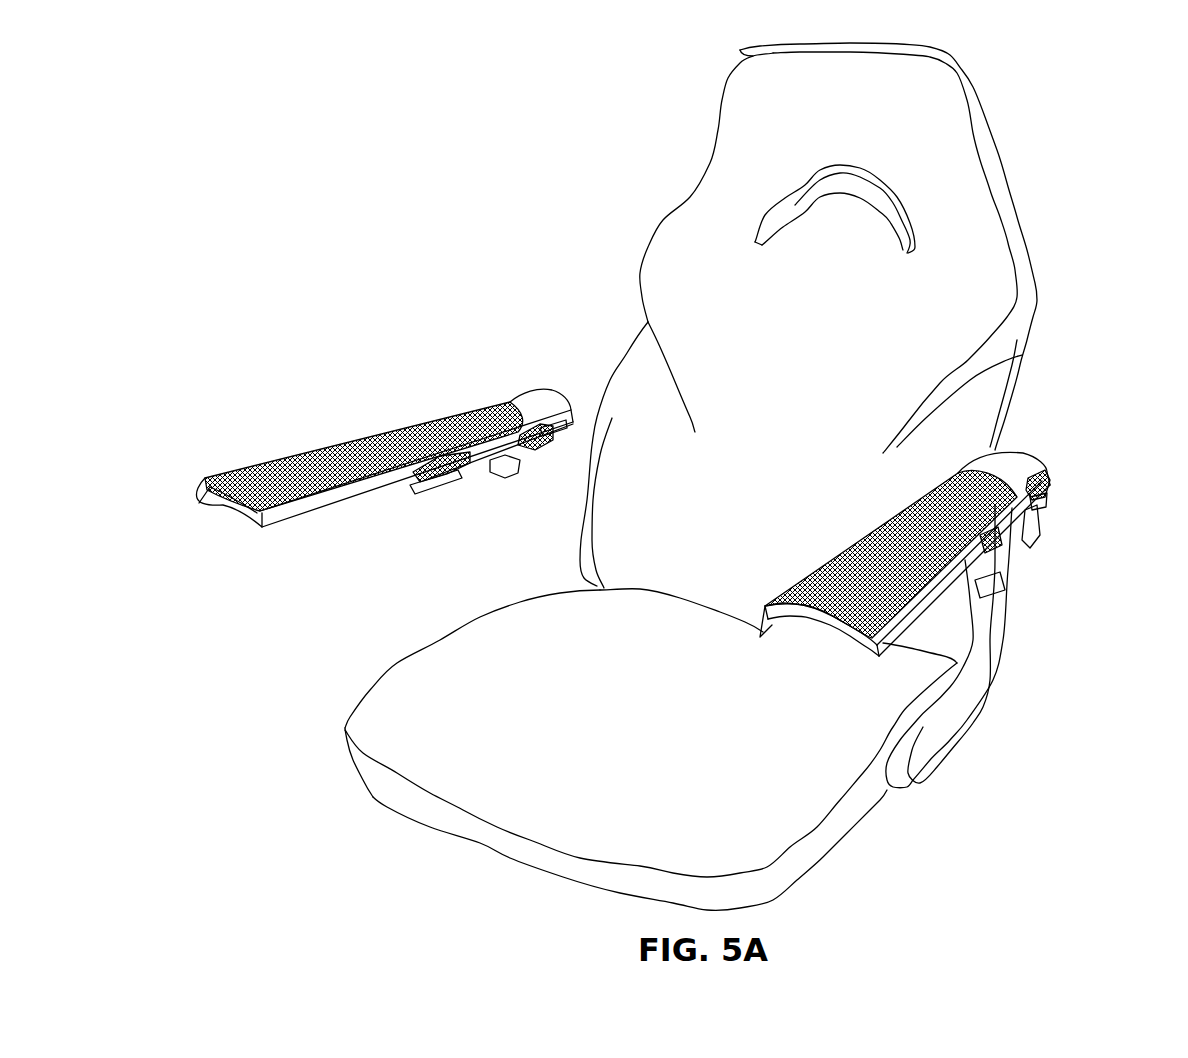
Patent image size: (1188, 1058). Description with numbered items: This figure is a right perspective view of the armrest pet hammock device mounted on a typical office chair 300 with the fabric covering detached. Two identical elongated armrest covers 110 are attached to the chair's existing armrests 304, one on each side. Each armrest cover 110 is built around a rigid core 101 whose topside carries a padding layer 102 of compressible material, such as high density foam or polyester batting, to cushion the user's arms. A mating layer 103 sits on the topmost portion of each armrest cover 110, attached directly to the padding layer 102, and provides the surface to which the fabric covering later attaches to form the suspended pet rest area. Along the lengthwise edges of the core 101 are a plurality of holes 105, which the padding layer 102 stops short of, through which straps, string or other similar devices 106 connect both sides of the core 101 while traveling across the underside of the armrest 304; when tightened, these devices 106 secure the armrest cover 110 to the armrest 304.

The chair 300 is at (1040, 116).
The armrest cover 110 is at (260, 336).
The core 101 is at (283, 510).
The padding layer 102 is at (525, 400).
The mating layer 103 is at (338, 450).
The holes 105 is at (553, 424).
The straps, string or other similar devices 106 is at (420, 490).
The armrest 304 is at (497, 462).